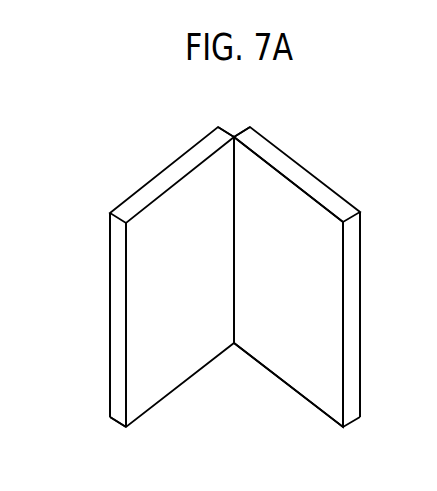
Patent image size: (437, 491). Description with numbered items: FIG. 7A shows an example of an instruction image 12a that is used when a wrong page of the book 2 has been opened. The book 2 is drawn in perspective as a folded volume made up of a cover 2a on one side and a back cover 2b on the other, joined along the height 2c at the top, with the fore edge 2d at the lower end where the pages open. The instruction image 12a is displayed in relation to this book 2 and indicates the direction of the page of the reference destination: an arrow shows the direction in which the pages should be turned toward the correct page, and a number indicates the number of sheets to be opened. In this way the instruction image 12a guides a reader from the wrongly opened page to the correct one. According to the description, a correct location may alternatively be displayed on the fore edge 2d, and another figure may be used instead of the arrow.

The book 2 is at (318, 142).
The cover 2a is at (110, 297).
The back cover 2b is at (360, 357).
The height 2c is at (228, 132).
The fore edge 2d is at (113, 417).
The instruction image 12a is at (388, 280).